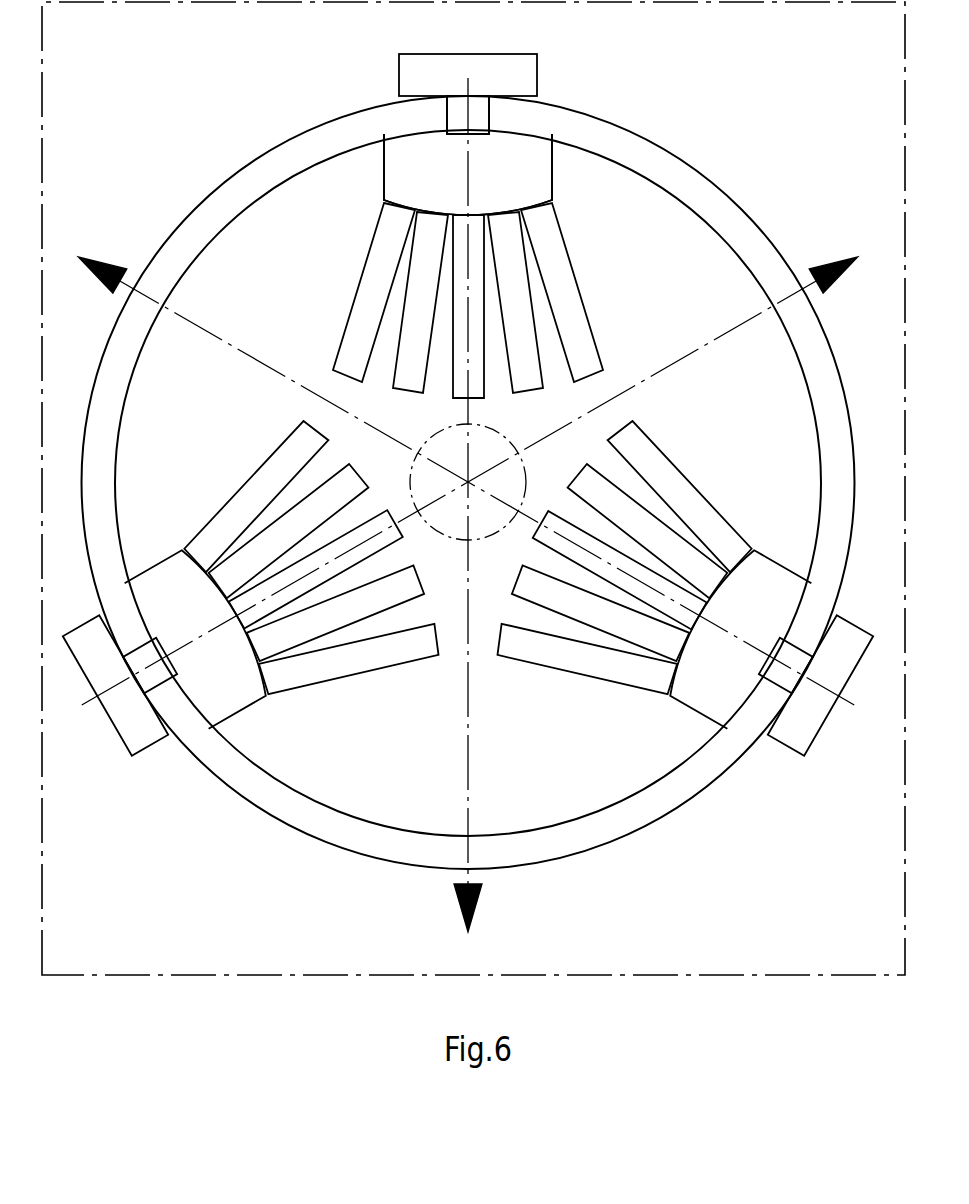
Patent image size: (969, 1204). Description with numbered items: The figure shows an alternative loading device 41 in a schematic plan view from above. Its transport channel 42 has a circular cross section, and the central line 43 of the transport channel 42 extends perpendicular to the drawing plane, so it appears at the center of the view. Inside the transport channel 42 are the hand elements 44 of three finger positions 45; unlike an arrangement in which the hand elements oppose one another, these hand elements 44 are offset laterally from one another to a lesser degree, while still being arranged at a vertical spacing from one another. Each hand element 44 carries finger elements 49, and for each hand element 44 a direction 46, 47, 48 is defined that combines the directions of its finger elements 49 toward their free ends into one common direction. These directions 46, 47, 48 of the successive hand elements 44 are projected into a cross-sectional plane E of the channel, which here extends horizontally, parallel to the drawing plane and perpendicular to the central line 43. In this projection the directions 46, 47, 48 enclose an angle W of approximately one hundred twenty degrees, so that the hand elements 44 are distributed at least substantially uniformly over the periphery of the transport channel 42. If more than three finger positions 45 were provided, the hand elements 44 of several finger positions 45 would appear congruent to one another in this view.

The loading device 41 is at (236, 106).
The transport channel 42 is at (632, 237).
The central line 43 is at (468, 482).
The hand element 44 is at (297, 237).
The finger position 45 is at (580, 69).
The direction 46 is at (248, 372).
The direction 47 is at (685, 360).
The direction 48 is at (466, 788).
The finger element 49 is at (375, 313).
The angle W is at (452, 452).
The cross-sectional plane E is at (663, 947).